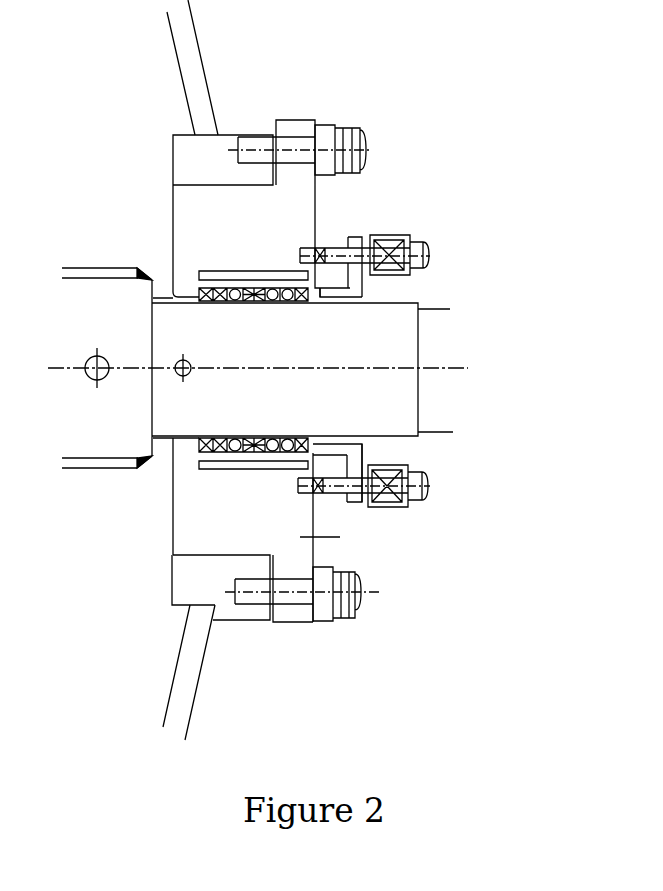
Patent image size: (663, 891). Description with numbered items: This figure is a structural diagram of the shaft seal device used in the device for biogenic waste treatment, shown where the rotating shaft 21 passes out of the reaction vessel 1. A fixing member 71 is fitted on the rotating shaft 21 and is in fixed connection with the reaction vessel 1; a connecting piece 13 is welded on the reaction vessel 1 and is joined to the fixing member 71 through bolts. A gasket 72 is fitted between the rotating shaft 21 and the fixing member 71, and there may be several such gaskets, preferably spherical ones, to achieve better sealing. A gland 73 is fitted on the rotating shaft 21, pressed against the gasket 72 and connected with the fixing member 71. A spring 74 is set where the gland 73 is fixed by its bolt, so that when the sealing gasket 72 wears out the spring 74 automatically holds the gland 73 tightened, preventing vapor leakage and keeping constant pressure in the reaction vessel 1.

The reaction vessel 1 is at (148, 663).
The connecting piece 13 is at (233, 612).
The rotating shaft 21 is at (393, 340).
The fixing member 71 is at (313, 480).
The gasket 72 is at (278, 453).
The gland 73 is at (357, 455).
The spring 74 is at (403, 507).